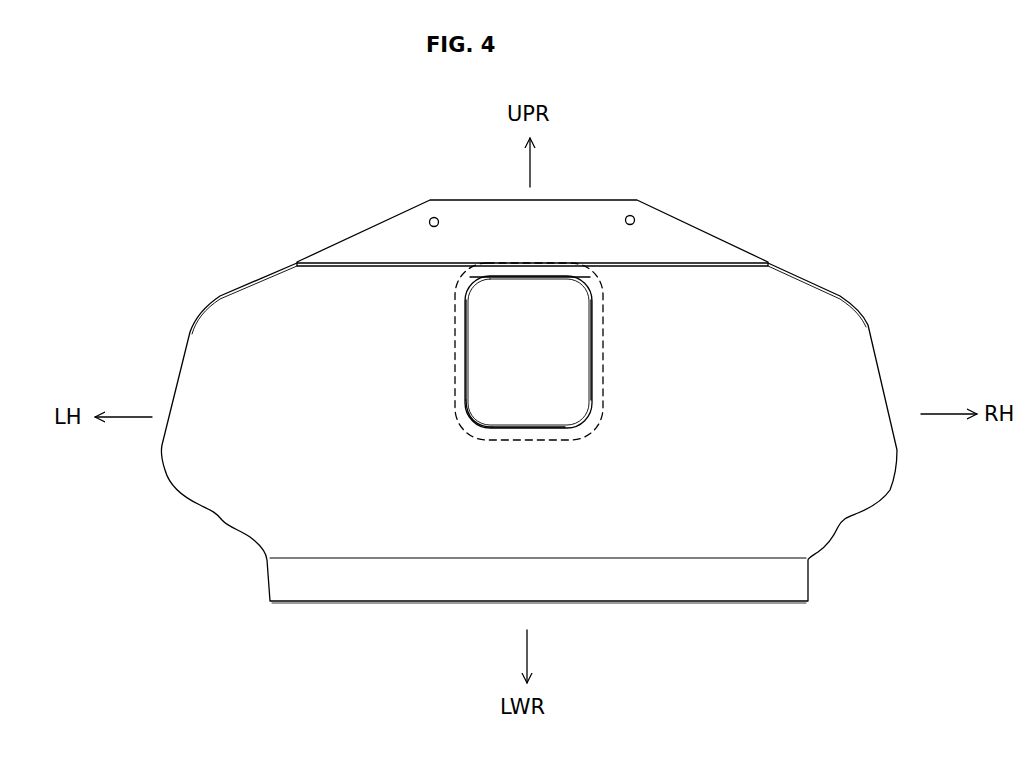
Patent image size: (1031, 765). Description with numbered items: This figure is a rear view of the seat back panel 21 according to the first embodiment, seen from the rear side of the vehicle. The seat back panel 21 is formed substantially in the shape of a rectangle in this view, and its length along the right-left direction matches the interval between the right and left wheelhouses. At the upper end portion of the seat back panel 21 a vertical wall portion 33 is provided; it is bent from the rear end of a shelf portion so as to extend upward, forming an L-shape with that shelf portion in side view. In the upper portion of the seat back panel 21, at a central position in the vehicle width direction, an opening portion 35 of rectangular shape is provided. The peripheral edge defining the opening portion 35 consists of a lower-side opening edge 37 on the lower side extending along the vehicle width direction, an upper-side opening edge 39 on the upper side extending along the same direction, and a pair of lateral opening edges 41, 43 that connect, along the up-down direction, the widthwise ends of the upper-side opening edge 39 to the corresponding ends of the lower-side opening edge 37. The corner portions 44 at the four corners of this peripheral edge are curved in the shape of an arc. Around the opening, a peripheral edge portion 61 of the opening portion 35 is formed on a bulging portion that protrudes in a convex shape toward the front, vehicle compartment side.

The seat back panel 21 is at (795, 254).
The vertical wall portion 33 is at (592, 215).
The opening portion 35 is at (575, 336).
The lower-side opening edge 37 is at (515, 430).
The upper-side opening edge 39 is at (525, 280).
The lateral opening edge 41 is at (468, 345).
The lateral opening edge 43 is at (586, 380).
The corner portion 44 is at (466, 408).
The peripheral edge portion 61 is at (462, 419).